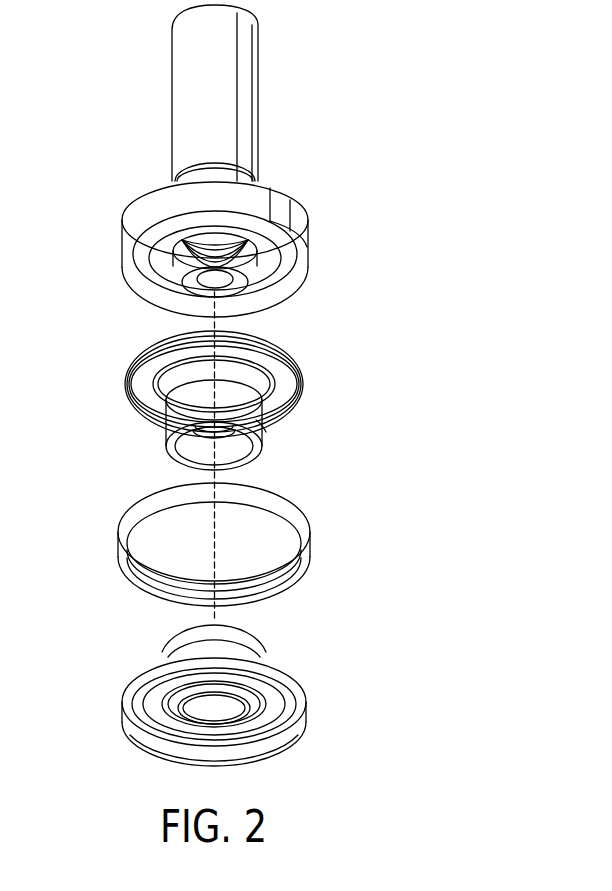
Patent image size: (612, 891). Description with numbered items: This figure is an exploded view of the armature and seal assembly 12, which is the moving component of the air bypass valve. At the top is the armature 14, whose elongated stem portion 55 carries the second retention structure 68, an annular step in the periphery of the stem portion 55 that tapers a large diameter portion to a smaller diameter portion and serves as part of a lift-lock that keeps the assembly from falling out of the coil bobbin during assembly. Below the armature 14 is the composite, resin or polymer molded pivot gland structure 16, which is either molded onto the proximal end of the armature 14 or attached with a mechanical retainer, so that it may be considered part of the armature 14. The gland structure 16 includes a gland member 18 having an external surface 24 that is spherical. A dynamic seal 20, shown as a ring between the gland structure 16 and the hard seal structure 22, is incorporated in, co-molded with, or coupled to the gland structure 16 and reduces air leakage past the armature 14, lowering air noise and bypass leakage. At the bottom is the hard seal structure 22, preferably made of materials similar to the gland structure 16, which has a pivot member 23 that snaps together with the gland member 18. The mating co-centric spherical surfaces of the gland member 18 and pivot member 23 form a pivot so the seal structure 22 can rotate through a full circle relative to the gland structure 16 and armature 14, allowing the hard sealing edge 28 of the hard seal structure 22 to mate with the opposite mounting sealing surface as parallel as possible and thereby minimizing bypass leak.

The armature and seal assembly 12 is at (76, 309).
The armature 14 is at (123, 215).
The pivot gland structure 16 is at (127, 393).
The gland member 18 is at (172, 423).
The dynamic seal 20 is at (120, 540).
The hard seal structure 22 is at (122, 702).
The pivot member 23 is at (243, 642).
The external surface 24 is at (258, 425).
The hard sealing edge 28 is at (160, 757).
The stem portion 55 is at (185, 70).
The second retention structure 68 is at (200, 162).